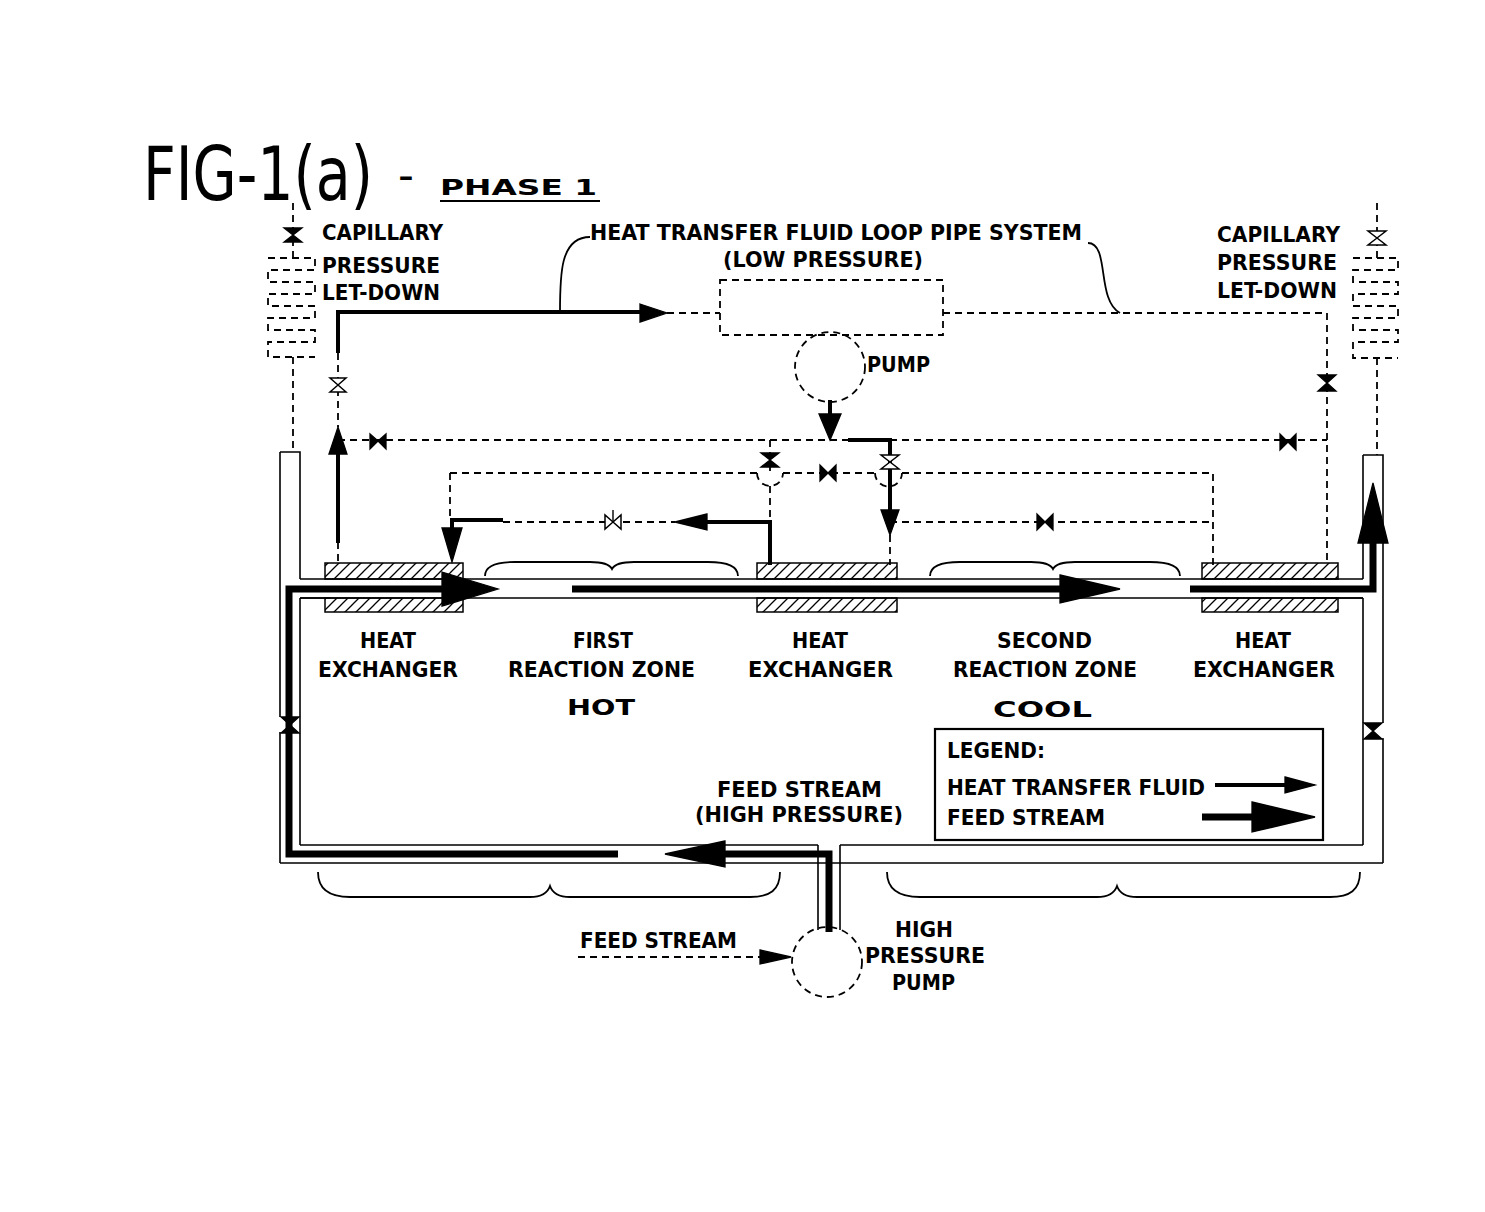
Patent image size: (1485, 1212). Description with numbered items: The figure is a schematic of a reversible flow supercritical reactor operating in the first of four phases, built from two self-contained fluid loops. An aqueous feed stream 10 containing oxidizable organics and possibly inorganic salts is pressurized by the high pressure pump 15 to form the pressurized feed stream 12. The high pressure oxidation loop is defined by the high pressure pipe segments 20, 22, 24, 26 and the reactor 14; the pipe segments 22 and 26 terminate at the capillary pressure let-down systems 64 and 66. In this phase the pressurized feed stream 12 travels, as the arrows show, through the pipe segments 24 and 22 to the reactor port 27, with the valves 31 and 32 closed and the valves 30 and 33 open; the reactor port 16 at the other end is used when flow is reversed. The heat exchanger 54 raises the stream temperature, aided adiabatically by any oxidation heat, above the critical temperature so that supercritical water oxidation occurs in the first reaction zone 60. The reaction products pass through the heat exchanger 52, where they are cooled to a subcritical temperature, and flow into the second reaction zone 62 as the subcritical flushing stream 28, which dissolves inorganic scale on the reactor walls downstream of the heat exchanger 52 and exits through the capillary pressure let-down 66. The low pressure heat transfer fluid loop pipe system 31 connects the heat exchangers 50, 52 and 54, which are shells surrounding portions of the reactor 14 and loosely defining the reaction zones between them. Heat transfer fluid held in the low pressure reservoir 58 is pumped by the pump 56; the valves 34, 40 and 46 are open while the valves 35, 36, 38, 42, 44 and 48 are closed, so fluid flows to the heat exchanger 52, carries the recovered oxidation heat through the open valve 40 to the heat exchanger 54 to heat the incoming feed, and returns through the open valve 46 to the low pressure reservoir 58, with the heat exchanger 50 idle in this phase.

The aqueous feed stream 10 is at (575, 955).
The pressurized feed stream 12 is at (840, 878).
The reactor 14 is at (513, 600).
The high pressure pump 15 is at (792, 980).
The reactor port 16 is at (1357, 603).
The high pressure pipe segment 20 is at (1106, 882).
The high pressure pipe segment 22 is at (280, 538).
The high pressure pipe segment 24 is at (555, 881).
The high pressure pipe segment 26 is at (1387, 530).
The reactor port 27 is at (312, 600).
The subcritical flushing stream 28 is at (1162, 603).
The valve 30 is at (285, 727).
The heat transfer fluid loop pipe system 31 is at (1385, 730).
The valve 32 is at (288, 237).
The valve 33 is at (1385, 238).
The valve 34 is at (900, 465).
The valve 35 is at (1282, 440).
The valve 36 is at (830, 481).
The valve 38 is at (1052, 517).
The valve 40 is at (618, 512).
The valve 42 is at (760, 465).
The valve 44 is at (386, 442).
The valve 46 is at (343, 385).
The valve 48 is at (1320, 383).
The heat exchanger 50 is at (1290, 565).
The heat exchanger 52 is at (825, 563).
The heat exchanger 54 is at (350, 563).
The pump 56 is at (796, 381).
The low pressure reservoir 58 is at (943, 304).
The first reaction zone 60 is at (611, 559).
The second reaction zone 62 is at (1055, 559).
The capillary pressure let-down system 64 is at (268, 318).
The capillary pressure let-down system 66 is at (1398, 318).